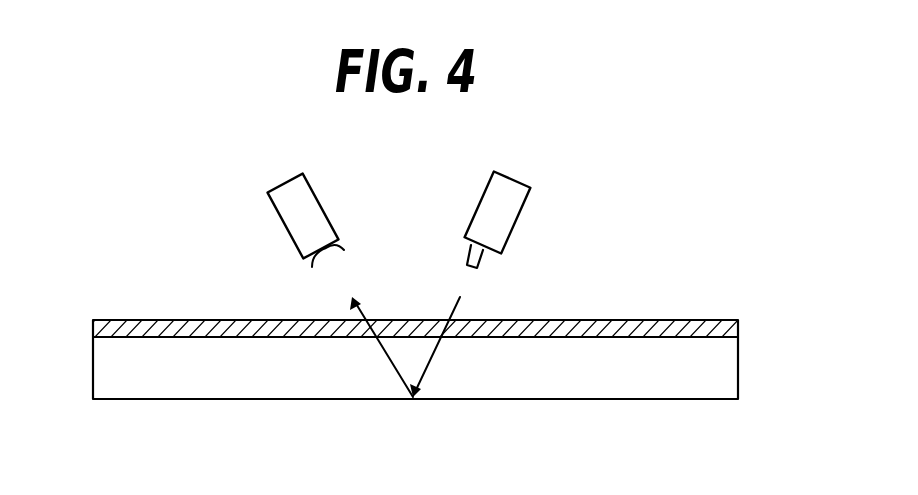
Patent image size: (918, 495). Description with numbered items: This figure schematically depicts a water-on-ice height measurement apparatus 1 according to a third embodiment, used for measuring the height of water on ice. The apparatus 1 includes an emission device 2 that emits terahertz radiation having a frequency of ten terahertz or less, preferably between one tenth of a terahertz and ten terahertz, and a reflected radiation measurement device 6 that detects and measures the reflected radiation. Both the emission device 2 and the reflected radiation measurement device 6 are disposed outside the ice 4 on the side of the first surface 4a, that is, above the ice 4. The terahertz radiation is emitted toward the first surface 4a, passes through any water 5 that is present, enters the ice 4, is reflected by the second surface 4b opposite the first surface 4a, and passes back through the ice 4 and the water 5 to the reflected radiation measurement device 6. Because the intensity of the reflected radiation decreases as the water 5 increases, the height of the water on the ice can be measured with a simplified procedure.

The apparatus for measuring a height of water on ice 1 is at (125, 225).
The emission device 2 is at (503, 222).
The ice 4 is at (733, 370).
The first surface 4a is at (112, 334).
The second surface 4b is at (113, 400).
The water 5 is at (733, 327).
The reflected radiation measurement device 6 is at (315, 212).